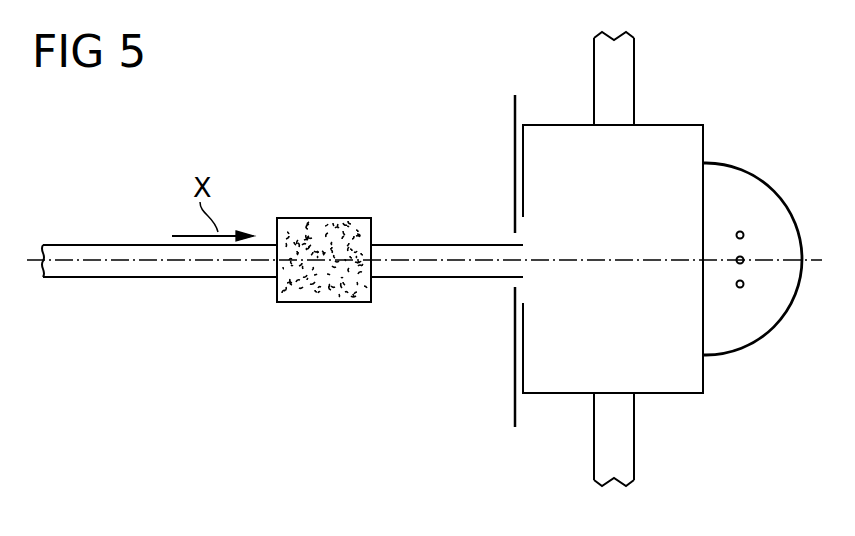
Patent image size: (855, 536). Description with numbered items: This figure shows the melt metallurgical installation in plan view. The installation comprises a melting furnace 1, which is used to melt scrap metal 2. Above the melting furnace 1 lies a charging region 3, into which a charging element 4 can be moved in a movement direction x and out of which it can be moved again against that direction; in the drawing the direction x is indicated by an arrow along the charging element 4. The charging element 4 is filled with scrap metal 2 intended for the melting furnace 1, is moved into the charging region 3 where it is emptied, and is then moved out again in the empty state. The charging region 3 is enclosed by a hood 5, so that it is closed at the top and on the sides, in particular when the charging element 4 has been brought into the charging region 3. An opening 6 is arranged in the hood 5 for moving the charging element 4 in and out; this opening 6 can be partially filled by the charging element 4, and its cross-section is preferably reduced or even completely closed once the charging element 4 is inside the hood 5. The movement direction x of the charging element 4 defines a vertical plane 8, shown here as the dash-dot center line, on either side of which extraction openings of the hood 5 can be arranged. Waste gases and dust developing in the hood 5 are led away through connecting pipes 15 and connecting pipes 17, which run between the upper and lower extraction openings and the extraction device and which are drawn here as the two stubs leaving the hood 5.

The melting furnace 1 is at (763, 164).
The scrap metal 2 is at (313, 236).
The charging region 3 is at (566, 163).
The charging element 4 is at (317, 302).
The hood 5 is at (562, 395).
The opening 6 is at (522, 278).
The vertical plane 8 is at (80, 260).
The connecting pipes 15 is at (624, 85).
The connecting pipes 17 is at (624, 441).